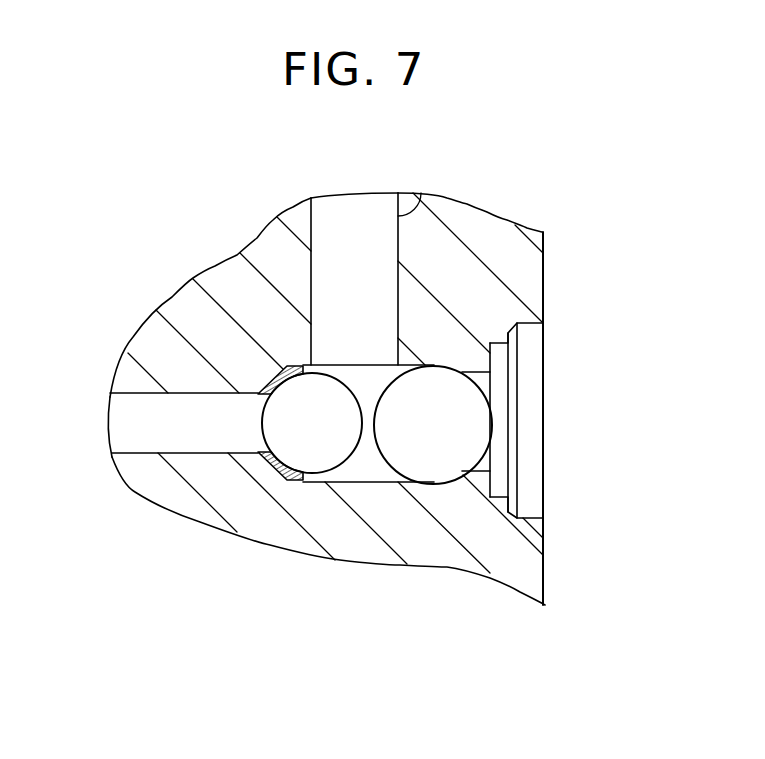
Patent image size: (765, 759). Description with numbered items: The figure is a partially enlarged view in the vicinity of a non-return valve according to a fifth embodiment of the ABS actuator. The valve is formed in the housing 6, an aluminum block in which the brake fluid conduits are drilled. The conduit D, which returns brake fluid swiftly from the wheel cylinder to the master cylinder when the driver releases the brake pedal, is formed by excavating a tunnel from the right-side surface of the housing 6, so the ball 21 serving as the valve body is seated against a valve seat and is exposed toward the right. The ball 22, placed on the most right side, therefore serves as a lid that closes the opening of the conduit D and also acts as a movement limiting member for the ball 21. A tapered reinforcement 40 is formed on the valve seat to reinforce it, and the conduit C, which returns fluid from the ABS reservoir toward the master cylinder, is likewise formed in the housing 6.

The housing 6 is at (543, 255).
The conduit C is at (421, 193).
The conduit D is at (145, 445).
The reinforcement 40 is at (275, 373).
The ball 21 is at (318, 447).
The ball 22 is at (428, 452).